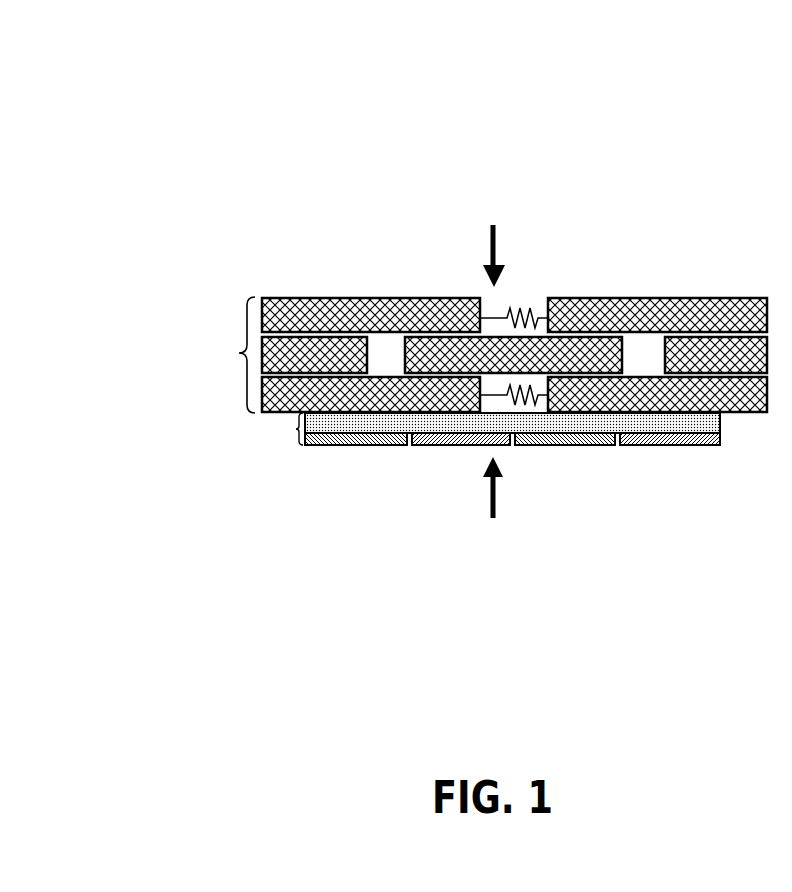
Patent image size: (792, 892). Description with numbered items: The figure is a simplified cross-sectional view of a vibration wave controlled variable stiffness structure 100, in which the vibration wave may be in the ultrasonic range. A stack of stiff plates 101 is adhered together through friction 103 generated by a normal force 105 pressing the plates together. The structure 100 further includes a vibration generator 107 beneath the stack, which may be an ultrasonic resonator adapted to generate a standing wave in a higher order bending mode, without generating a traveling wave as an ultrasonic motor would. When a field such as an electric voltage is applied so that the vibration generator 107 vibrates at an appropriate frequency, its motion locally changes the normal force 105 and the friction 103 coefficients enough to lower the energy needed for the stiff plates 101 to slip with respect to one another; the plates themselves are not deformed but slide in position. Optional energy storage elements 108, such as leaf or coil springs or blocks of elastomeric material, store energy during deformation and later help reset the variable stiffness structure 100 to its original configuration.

The vibration wave controlled variable stiffness structure 100 is at (95, 100).
The stack of stiff plates 101 is at (243, 353).
The friction 103 is at (410, 330).
The normal force 105 is at (495, 243).
The vibration generator 107 is at (296, 430).
The energy storage elements 108 is at (540, 312).